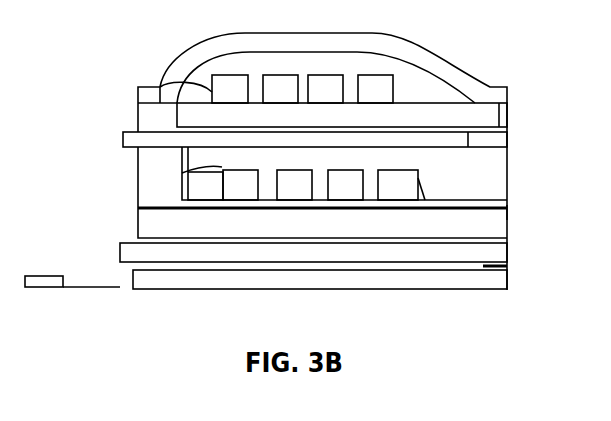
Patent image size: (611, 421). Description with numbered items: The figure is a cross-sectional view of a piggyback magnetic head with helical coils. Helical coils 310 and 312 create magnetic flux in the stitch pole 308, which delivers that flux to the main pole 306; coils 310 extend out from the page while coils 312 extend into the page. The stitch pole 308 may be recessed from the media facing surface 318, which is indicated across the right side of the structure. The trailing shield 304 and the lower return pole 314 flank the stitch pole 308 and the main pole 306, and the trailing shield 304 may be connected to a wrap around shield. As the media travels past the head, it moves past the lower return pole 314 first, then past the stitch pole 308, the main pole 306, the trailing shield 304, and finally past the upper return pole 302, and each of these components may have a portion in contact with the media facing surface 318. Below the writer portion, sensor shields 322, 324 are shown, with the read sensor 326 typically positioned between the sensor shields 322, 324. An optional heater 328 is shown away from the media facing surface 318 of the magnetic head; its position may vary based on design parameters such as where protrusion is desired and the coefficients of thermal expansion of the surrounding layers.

The upper return pole 302 is at (448, 57).
The trailing shield 304 is at (507, 118).
The main pole 306 is at (507, 138).
The stitch pole 308 is at (460, 148).
The helical coils 310 is at (160, 87).
The helical coils 312 is at (222, 167).
The lower return pole 314 is at (356, 230).
The media facing surface 318 is at (518, 212).
The sensor shield 322 is at (120, 252).
The sensor shield 324 is at (133, 280).
The read sensor 326 is at (502, 264).
The heater 328 is at (53, 276).